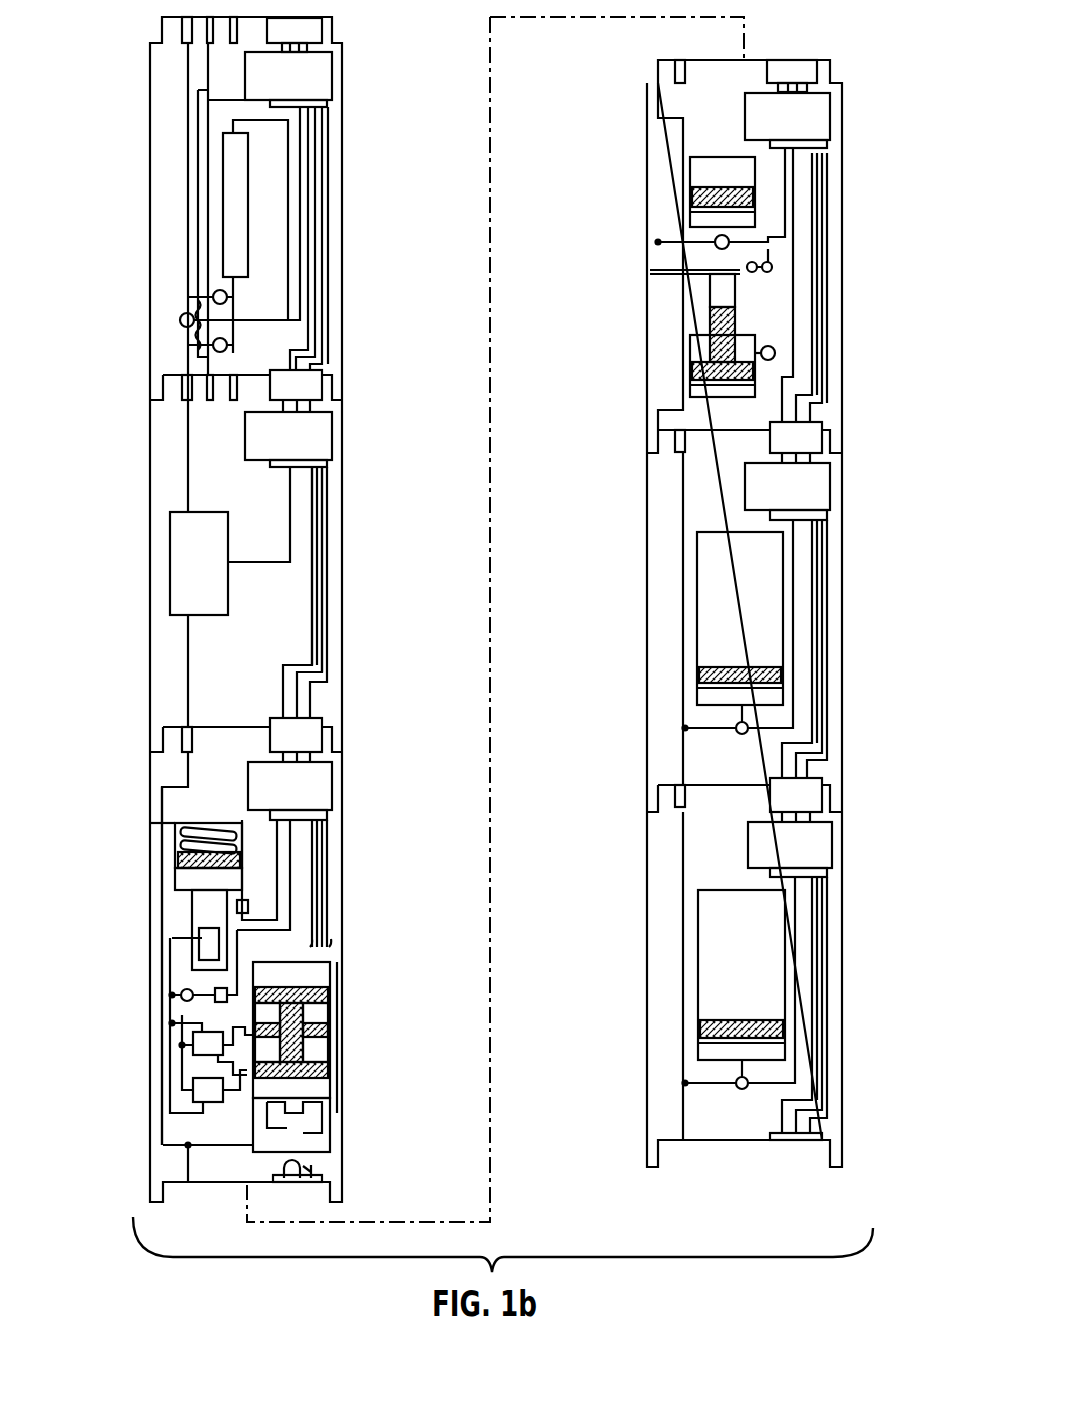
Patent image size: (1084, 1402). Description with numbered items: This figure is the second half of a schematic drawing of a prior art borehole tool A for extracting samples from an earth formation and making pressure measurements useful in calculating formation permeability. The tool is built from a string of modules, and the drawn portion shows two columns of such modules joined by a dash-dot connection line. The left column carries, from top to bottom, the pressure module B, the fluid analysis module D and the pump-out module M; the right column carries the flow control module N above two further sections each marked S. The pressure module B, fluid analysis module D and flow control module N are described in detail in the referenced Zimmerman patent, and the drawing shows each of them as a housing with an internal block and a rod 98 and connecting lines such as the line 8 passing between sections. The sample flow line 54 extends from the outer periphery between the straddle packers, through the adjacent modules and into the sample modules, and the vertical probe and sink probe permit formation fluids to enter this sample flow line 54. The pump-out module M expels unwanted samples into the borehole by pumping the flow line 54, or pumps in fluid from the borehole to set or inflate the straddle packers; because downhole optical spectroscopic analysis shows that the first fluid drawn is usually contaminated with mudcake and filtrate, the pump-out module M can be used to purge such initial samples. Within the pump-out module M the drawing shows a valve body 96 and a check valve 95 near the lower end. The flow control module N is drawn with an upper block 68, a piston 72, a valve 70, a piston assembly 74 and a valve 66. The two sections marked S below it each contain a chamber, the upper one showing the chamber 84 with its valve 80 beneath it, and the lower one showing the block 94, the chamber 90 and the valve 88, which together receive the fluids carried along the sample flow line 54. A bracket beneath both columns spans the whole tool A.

The borehole tool A is at (138, 1186).
The pressure module B is at (208, 264).
The fluid analysis module D is at (233, 576).
The pump-out module M is at (245, 967).
The flow control module N is at (748, 256).
The sample chamber section S is at (787, 797).
The flow line 8 is at (326, 566).
The rod 98 is at (236, 258).
The sample flow line 54 is at (156, 967).
The valve body 96 is at (338, 1123).
The check valve 95 is at (340, 1144).
The upper block 68 is at (763, 121).
The piston 72 is at (690, 214).
The valve 70 is at (770, 273).
The piston assembly 74 is at (690, 358).
The valve 66 is at (775, 353).
The sample chamber 84 is at (747, 582).
The valve 80 is at (742, 736).
The block 94 is at (796, 864).
The sample chamber 90 is at (746, 937).
The valve 88 is at (742, 1090).